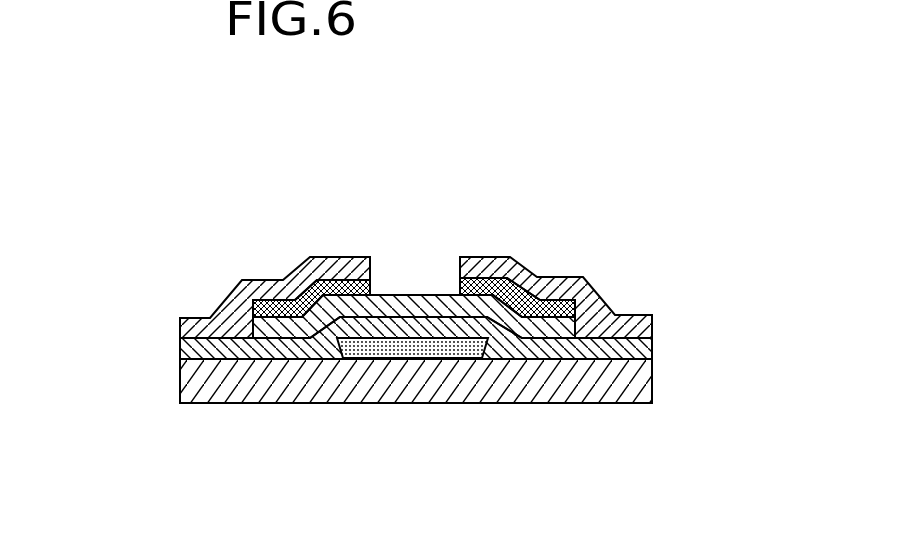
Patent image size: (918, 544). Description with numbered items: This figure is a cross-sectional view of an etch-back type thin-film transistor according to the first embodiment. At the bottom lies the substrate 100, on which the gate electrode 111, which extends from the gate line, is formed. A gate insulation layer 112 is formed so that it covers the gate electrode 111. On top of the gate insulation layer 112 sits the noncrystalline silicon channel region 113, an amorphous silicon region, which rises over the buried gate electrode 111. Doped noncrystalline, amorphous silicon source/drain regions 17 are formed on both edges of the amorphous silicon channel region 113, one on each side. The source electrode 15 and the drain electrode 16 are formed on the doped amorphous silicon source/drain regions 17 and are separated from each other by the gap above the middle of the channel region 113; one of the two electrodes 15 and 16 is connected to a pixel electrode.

The substrate 100 is at (645, 382).
The gate electrode 111 is at (428, 347).
The gate insulation layer 112 is at (180, 352).
The noncrystalline silicon channel region 113 is at (410, 302).
The doped noncrystalline silicon source/drain regions 17 is at (270, 297).
The source electrode 15 is at (330, 260).
The drain electrode 16 is at (487, 257).